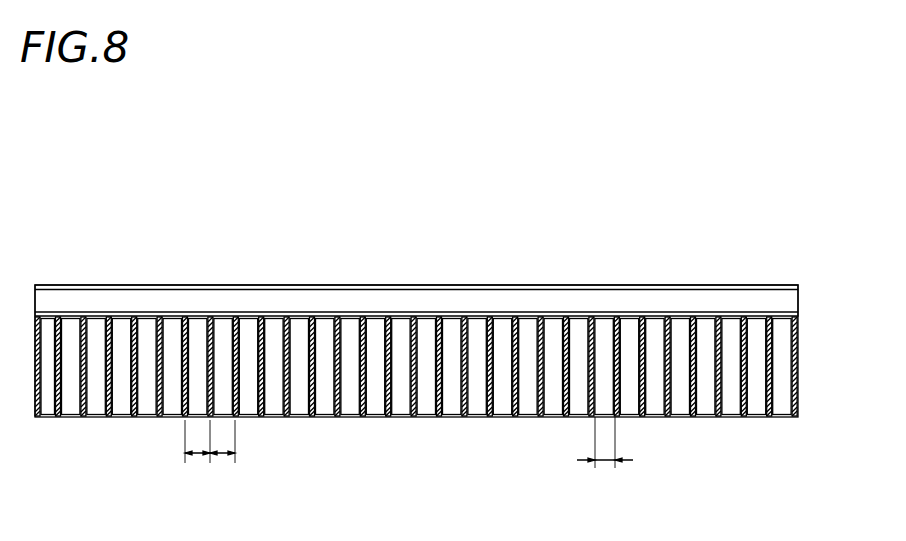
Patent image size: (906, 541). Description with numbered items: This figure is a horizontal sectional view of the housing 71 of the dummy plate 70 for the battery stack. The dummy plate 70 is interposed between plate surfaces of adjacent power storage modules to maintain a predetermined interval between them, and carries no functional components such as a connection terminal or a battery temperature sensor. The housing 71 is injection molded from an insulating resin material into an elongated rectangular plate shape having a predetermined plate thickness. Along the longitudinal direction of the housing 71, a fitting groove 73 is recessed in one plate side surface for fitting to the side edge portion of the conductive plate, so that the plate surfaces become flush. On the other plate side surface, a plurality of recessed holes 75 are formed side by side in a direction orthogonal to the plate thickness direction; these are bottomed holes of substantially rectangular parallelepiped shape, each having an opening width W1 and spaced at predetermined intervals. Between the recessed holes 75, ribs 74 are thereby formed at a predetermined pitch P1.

The dummy plate 70 is at (188, 218).
The housing 71 is at (374, 282).
The fitting groove 73 is at (523, 308).
The rib 74 is at (113, 380).
The recessed hole 75 is at (104, 317).
The pitch P1 is at (197, 458).
The opening width W1 is at (605, 463).